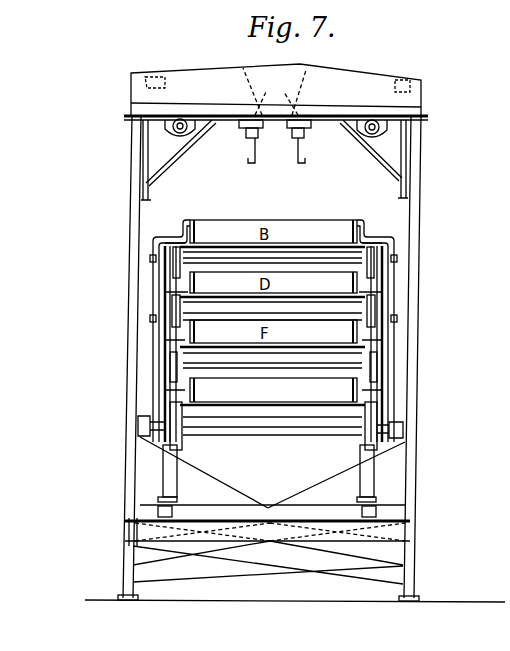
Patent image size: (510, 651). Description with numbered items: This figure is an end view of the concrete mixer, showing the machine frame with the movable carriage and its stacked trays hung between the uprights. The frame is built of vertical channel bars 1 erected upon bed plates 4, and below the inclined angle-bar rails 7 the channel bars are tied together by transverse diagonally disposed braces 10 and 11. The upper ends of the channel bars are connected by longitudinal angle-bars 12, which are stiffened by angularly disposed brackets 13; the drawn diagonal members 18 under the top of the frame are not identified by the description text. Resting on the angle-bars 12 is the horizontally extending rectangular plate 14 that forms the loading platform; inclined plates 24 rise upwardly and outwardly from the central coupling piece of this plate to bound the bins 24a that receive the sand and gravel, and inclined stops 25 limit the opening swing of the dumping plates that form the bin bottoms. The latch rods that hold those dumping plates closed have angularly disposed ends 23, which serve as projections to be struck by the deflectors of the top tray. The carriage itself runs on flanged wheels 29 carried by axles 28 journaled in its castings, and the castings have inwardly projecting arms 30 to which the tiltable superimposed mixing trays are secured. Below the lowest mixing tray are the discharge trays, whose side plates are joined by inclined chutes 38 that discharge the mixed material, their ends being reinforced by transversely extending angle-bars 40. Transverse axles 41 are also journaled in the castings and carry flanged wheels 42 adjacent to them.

The channel bar 1 is at (126, 538).
The bed plate 4 is at (124, 601).
The rail 7 is at (178, 482).
The brace 10 is at (263, 503).
The brace 11 is at (270, 556).
The longitudinal angle-bar 12 is at (138, 127).
The bracket 13 is at (162, 156).
The plate 14 is at (338, 115).
The diagonal brace 18 is at (182, 148).
The angularly disposed end 23 is at (246, 166).
The inclined plate 24 is at (180, 72).
The bin 24a is at (256, 97).
The inclined stop 25 is at (150, 74).
The axle 28 is at (335, 431).
The flanged wheel 29 is at (165, 446).
The inwardly projecting arm 30 is at (165, 233).
The inclined chute 38 is at (356, 402).
The angle-bar 40 is at (259, 502).
The transverse axle 41 is at (303, 367).
The flanged wheel 42 is at (162, 315).